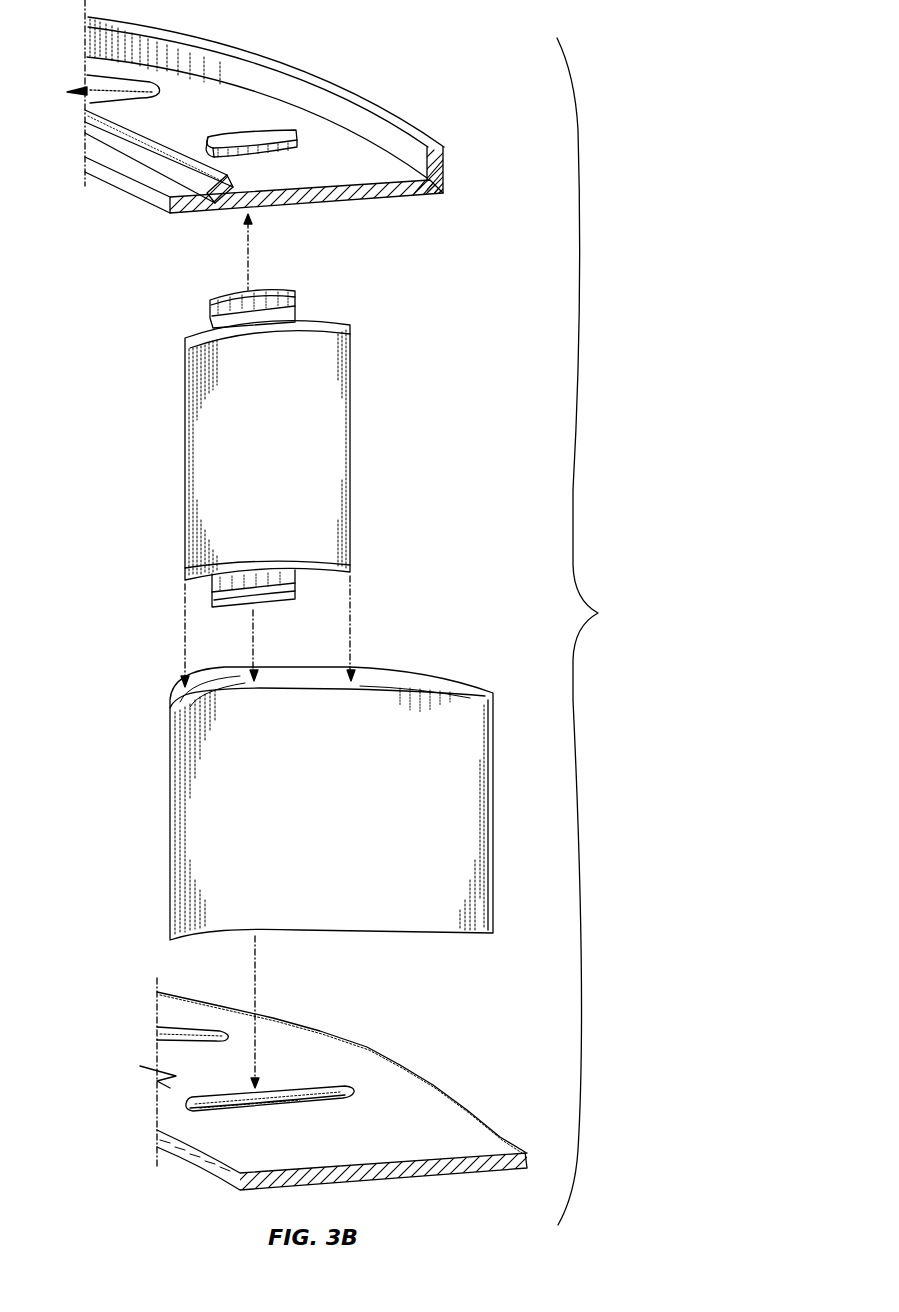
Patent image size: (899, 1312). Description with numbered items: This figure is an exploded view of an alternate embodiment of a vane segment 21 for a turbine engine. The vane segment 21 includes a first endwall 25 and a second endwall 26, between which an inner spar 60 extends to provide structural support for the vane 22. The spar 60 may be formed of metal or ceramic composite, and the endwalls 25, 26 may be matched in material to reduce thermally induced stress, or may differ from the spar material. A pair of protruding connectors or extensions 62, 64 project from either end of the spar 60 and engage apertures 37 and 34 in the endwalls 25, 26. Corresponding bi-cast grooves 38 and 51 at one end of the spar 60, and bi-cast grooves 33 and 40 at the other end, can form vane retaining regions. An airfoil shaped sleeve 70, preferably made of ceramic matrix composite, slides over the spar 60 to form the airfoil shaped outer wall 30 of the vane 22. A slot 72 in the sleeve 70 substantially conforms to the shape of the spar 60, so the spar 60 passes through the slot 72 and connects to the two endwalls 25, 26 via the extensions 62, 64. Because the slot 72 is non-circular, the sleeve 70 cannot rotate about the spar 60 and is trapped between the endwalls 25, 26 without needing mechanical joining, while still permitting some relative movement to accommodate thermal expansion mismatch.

The vane segment 21 is at (594, 631).
The vane 22 is at (482, 817).
The first endwall 25 is at (397, 1072).
The second endwall 26 is at (448, 169).
The outer surface or wall 30 is at (331, 782).
The bi-cast groove 33 is at (288, 597).
The aperture 34 is at (230, 1090).
The aperture 37 is at (257, 132).
The bi-cast groove 38 is at (295, 306).
The bi-cast groove 40 is at (272, 1092).
The bi-cast groove 51 is at (233, 135).
The inner spar 60 is at (351, 433).
The protruding connector or extension 62 is at (212, 308).
The protruding connector or extension 64 is at (212, 597).
The airfoil shaped sleeve 70 is at (417, 720).
The slot 72 is at (273, 680).